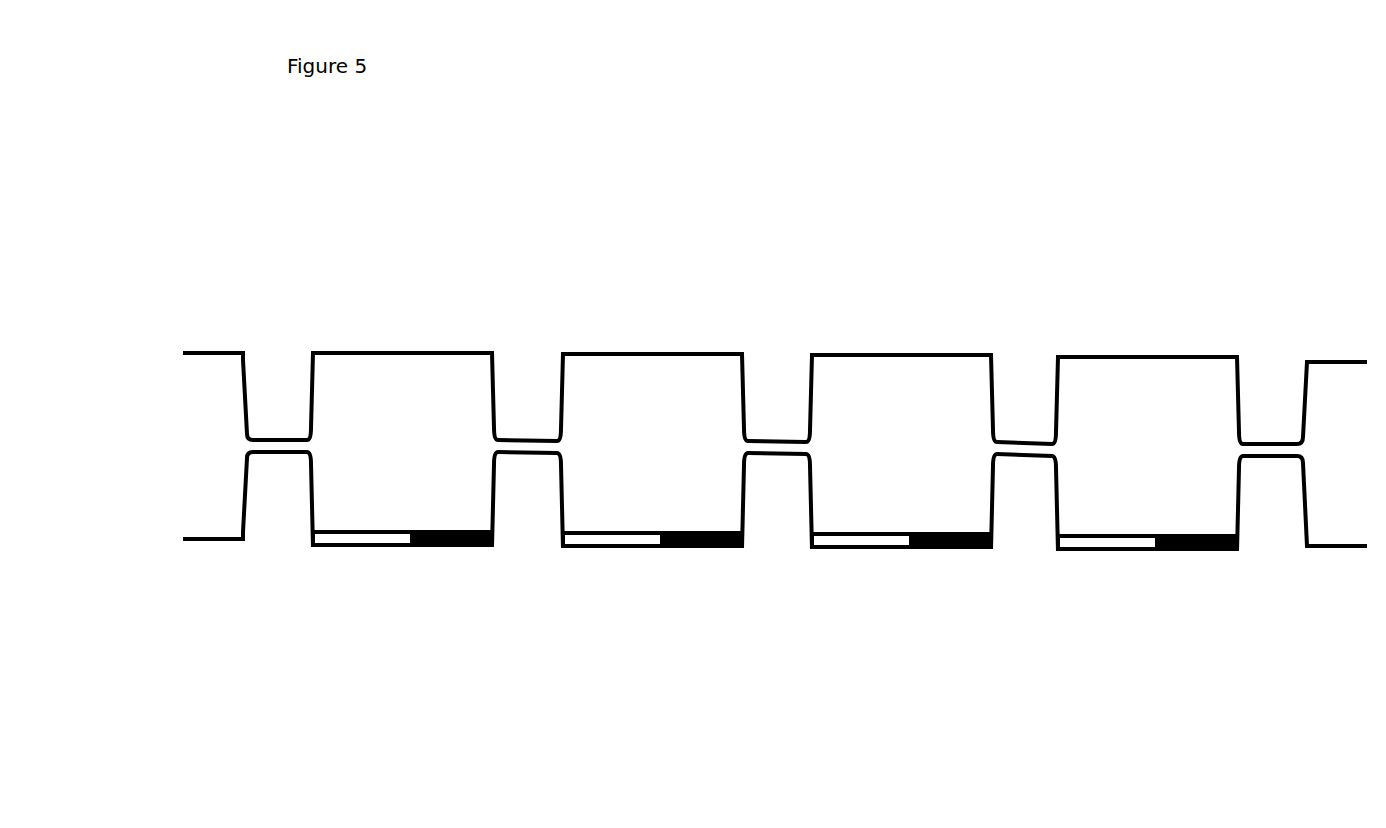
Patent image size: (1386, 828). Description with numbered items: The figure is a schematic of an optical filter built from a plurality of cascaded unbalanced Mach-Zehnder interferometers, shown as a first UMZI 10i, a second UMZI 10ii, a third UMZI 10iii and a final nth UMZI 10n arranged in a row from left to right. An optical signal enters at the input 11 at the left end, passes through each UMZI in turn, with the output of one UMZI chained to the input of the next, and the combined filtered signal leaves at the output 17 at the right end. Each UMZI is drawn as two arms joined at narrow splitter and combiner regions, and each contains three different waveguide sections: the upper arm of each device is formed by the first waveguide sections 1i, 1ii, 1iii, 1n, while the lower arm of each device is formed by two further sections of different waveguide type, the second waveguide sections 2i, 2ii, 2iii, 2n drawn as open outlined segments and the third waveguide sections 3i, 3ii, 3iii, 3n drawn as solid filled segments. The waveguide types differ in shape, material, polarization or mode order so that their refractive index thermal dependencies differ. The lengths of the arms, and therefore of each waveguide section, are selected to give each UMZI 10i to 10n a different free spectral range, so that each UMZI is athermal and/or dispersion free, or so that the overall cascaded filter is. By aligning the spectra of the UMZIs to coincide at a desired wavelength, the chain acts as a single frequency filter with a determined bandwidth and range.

The first waveguide section 1i is at (403, 357).
The first waveguide section 1ii is at (655, 358).
The first waveguide section 1iii is at (905, 359).
The first waveguide section 1n is at (1150, 361).
The second waveguide section 2i is at (362, 607).
The second waveguide section 2ii is at (612, 608).
The second waveguide section 2iii is at (861, 609).
The second waveguide section 2n is at (1107, 611).
The third waveguide section 3i is at (453, 608).
The third waveguide section 3ii is at (704, 609).
The third waveguide section 3iii is at (955, 610).
The third waveguide section 3n is at (1200, 612).
The unbalanced Mach-Zehnder interferometer 10i is at (402, 415).
The unbalanced Mach-Zehnder interferometer 10ii is at (654, 416).
The unbalanced Mach-Zehnder interferometer 10iii is at (904, 417).
The unbalanced Mach-Zehnder interferometer 10n is at (1149, 419).
The input 11 is at (215, 350).
The output 17 is at (1340, 548).